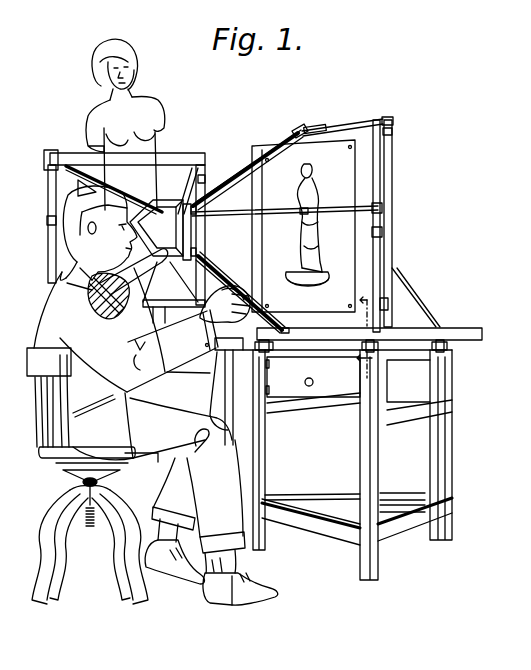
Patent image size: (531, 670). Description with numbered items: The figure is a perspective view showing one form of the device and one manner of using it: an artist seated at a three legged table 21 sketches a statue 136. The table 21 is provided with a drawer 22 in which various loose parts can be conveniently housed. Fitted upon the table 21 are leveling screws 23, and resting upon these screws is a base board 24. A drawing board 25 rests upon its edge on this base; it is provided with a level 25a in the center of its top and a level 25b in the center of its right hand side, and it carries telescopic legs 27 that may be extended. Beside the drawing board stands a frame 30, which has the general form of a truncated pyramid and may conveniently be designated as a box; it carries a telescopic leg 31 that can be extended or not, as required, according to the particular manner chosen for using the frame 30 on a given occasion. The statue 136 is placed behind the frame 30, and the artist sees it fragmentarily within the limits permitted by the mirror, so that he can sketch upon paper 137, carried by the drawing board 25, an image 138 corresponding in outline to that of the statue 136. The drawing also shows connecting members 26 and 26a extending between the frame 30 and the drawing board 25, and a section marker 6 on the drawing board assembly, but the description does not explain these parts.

The statue 136 is at (138, 108).
The frame 30 is at (170, 165).
The telescopic leg 31 is at (48, 200).
The pantograph arm rods 26 is at (252, 172).
The eyepiece support bar 26a is at (193, 232).
The drawing board 25 is at (340, 133).
The level 25a is at (318, 130).
The level 25b is at (383, 232).
The paper 137 is at (342, 178).
The image 138 is at (312, 208).
The telescopic legs 27 is at (386, 243).
The base board 24 is at (476, 336).
The leveling screws 23 is at (257, 351).
The drawer 22 is at (337, 398).
The three legged table 21 is at (414, 358).
The section line 6- 6 is at (365, 332).